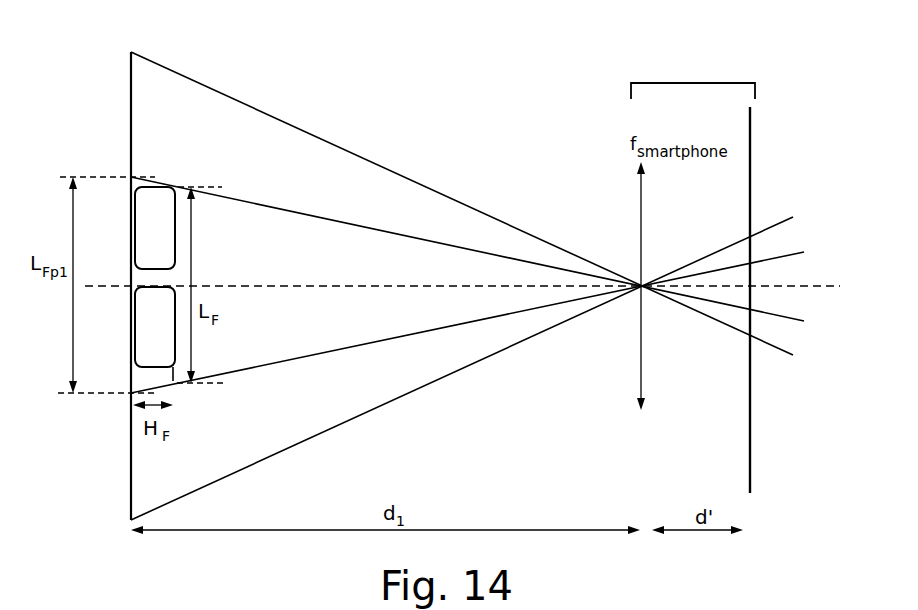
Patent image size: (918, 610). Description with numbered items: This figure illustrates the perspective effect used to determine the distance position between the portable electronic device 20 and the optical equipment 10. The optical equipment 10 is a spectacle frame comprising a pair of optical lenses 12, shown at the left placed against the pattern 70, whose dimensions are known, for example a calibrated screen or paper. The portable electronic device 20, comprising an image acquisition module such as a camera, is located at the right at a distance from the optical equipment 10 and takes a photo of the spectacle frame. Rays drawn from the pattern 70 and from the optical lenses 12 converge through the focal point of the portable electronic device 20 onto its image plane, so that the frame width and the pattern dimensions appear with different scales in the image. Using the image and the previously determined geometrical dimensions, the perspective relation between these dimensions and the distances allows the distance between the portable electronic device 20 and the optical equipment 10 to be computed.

The pattern 70 is at (124, 104).
The optical lenses 12 is at (156, 230).
The optical equipment 10 is at (134, 367).
The portable electronic device 20 is at (694, 92).